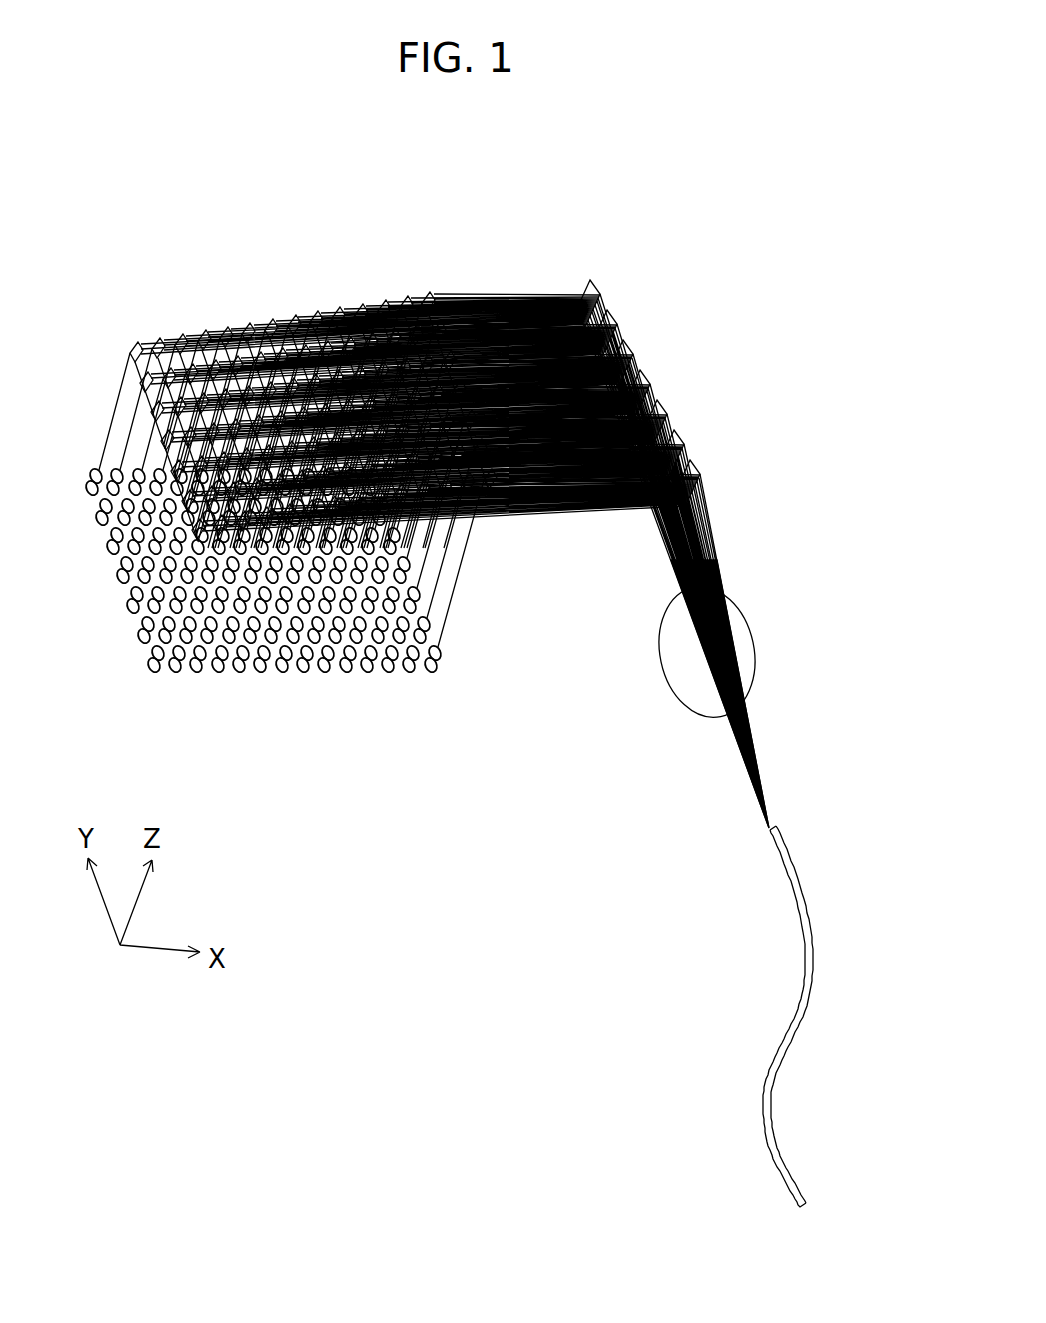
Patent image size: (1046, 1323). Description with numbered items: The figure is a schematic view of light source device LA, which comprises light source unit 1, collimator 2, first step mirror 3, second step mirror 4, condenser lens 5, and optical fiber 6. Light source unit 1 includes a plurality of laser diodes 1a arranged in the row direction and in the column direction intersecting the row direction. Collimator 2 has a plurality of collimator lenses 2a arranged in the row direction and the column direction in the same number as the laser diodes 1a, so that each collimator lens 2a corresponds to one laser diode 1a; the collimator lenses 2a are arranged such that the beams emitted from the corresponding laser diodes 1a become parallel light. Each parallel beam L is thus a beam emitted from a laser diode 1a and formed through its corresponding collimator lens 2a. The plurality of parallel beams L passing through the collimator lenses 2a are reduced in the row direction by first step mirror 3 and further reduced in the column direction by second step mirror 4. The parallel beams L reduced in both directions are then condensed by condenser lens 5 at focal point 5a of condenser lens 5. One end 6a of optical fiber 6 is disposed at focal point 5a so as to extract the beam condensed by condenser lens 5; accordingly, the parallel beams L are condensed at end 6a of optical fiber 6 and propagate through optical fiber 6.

The light source device LA is at (737, 207).
The parallel beam L is at (128, 352).
The light source unit 1 is at (321, 545).
The laser diode 1a is at (433, 674).
The collimator 2 is at (321, 632).
The collimator lens 2a is at (447, 654).
The first step mirror 3 is at (432, 292).
The second step mirror 4 is at (612, 308).
The condenser lens 5 is at (740, 600).
The focal point 5a is at (765, 828).
The optical fiber 6 is at (803, 877).
The end of optical fiber 6a is at (772, 842).